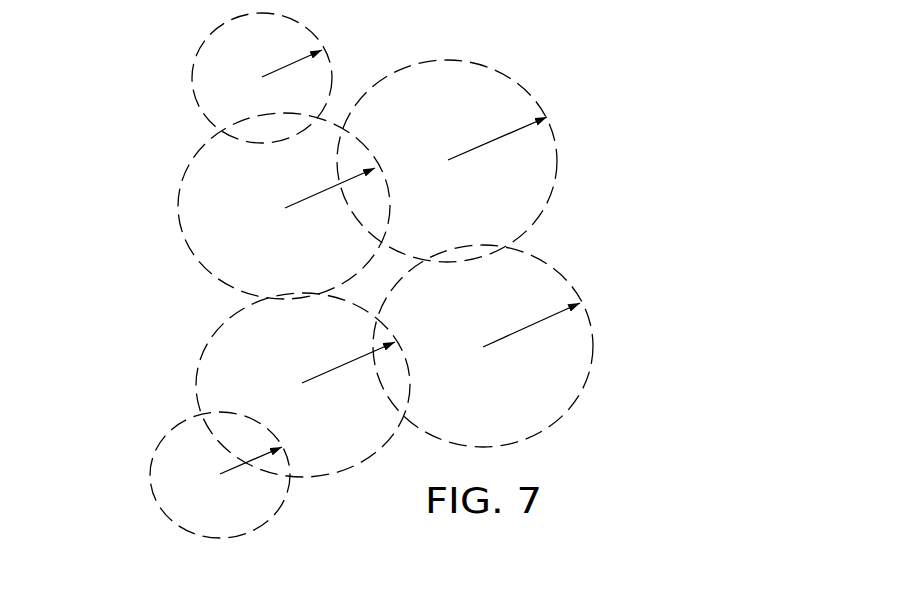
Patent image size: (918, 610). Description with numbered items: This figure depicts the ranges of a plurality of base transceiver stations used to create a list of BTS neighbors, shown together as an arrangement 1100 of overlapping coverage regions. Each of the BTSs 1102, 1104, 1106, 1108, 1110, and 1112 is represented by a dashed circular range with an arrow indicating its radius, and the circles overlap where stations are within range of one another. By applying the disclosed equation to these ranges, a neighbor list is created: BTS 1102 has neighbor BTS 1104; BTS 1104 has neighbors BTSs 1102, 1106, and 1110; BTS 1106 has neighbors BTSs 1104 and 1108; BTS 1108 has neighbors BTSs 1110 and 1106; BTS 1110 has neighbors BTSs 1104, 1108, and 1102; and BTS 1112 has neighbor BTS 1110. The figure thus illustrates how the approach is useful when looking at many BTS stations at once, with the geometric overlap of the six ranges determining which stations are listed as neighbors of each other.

The feature detection / tracking window arrangement 1100 is at (602, 74).
The BTS 1102 is at (192, 76).
The BTS 1104 is at (179, 210).
The BTS 1106 is at (558, 158).
The BTS 1108 is at (593, 344).
The BTS 1110 is at (198, 360).
The BTS 1112 is at (150, 478).